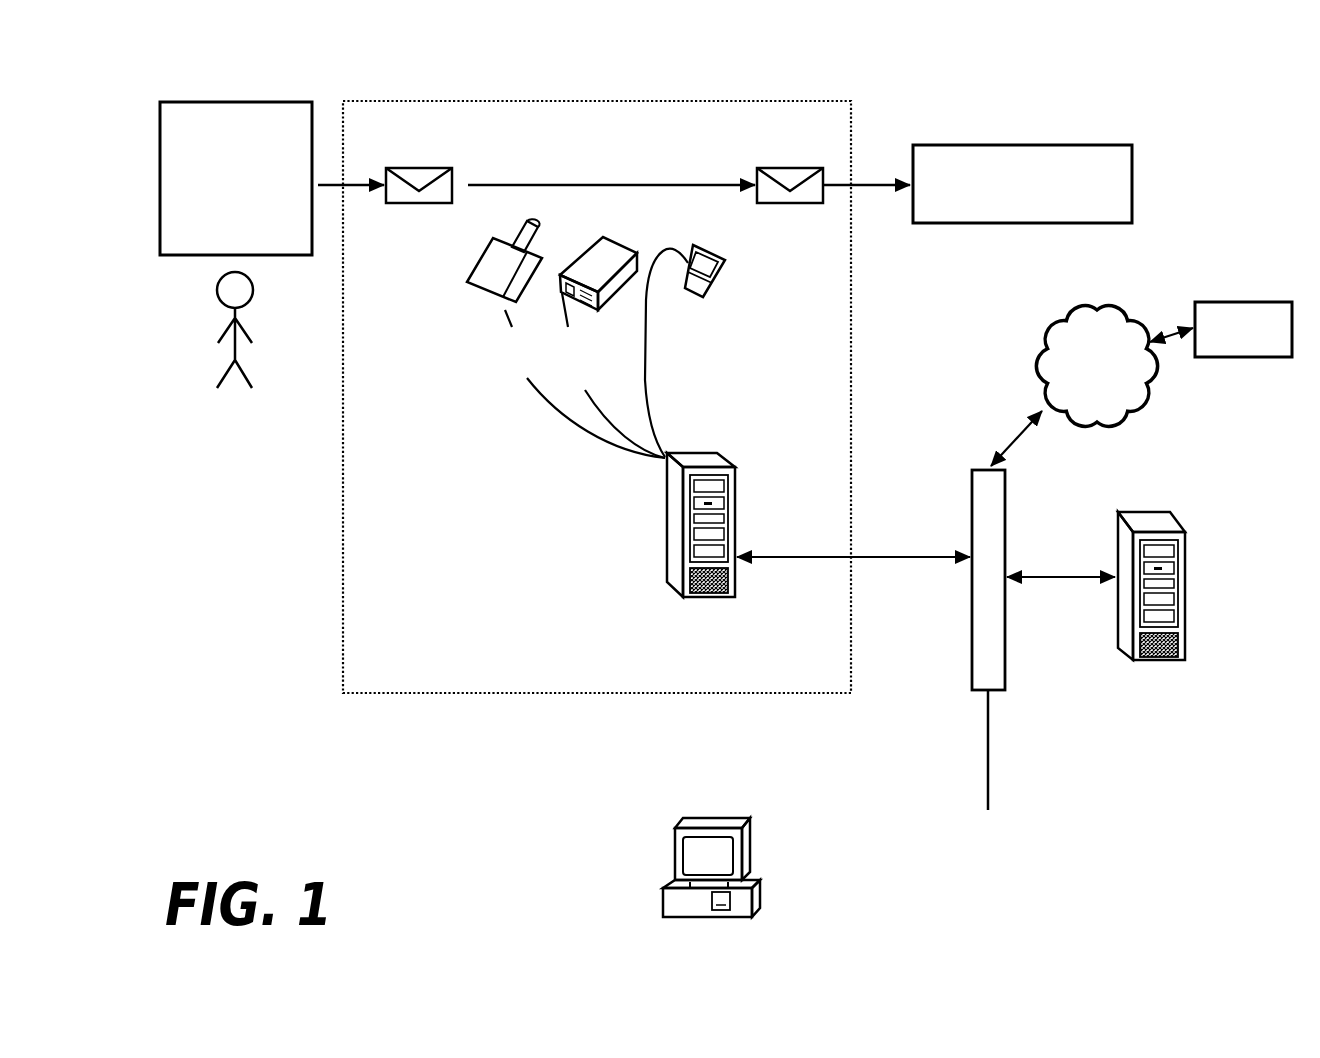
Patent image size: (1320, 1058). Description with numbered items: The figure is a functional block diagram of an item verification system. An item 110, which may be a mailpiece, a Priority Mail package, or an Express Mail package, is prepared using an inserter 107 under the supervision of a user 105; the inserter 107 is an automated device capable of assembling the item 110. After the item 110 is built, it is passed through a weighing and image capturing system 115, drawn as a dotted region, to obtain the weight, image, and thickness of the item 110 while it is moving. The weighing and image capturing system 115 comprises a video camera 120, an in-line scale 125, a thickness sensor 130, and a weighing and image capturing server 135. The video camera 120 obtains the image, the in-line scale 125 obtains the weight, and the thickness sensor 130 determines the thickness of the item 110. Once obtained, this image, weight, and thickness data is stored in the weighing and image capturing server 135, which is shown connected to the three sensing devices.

The user 105 is at (217, 290).
The inserter 107 is at (237, 101).
The item 110 is at (420, 204).
The weighing and image capturing system 115 is at (343, 590).
The video camera 120 is at (470, 294).
The in-line scale 125 is at (622, 240).
The thickness sensor 130 is at (712, 290).
The weighing and image capturing server 135 is at (716, 455).